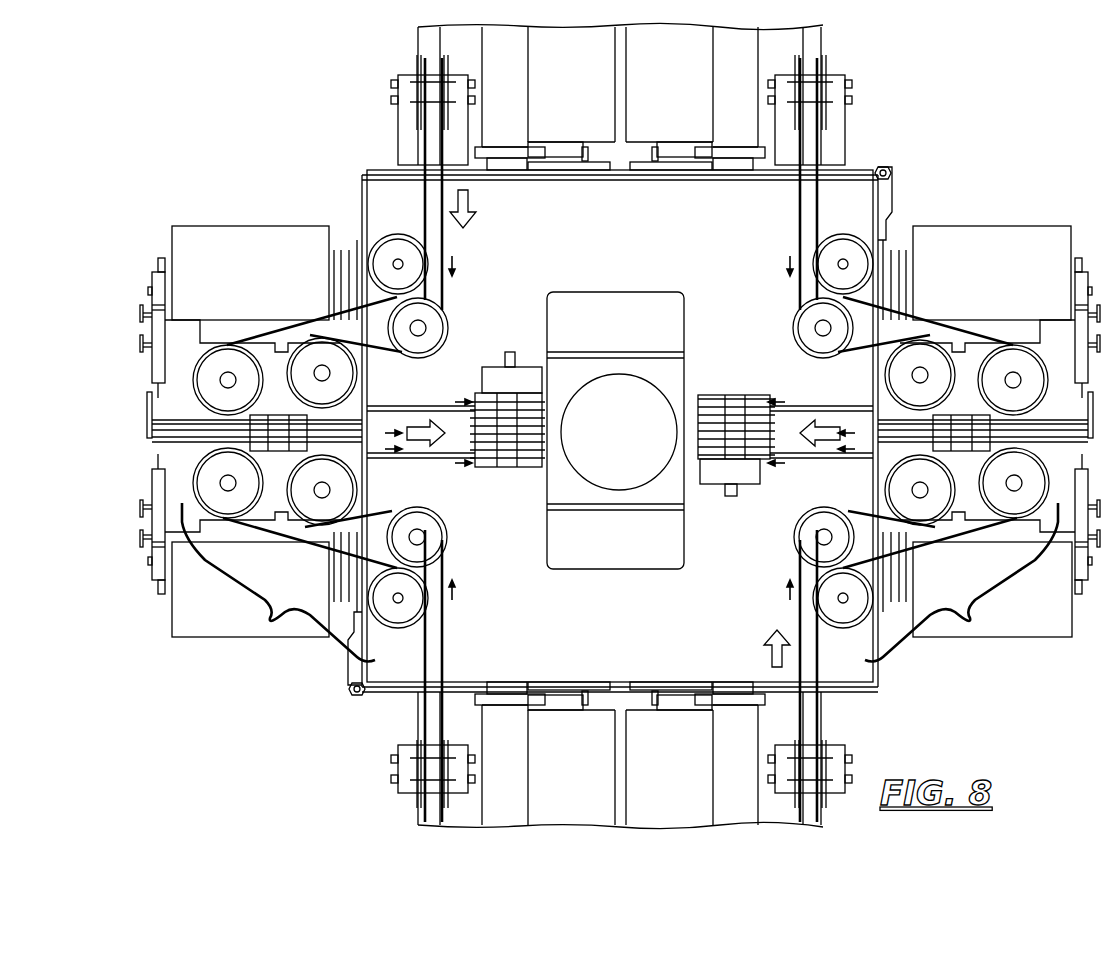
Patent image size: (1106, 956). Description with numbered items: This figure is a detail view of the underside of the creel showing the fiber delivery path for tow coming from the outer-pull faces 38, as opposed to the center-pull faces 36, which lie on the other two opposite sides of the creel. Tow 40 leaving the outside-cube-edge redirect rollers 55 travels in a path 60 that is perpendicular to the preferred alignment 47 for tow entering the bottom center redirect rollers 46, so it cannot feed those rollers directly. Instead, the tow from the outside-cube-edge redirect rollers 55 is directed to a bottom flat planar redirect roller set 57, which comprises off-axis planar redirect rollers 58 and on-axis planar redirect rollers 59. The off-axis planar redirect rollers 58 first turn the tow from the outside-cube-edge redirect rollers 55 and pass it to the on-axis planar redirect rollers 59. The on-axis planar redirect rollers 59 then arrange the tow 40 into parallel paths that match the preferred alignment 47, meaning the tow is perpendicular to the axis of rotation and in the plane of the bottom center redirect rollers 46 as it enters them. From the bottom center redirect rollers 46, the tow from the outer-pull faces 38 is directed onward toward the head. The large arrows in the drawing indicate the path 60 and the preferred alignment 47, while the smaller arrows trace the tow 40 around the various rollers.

The center-pull face 36 is at (895, 217).
The outer-pull face 38 is at (863, 155).
The tow 40 is at (430, 195).
The bottom center redirect rollers 46 is at (525, 430).
The preferred alignment 47 is at (428, 425).
The outside-cube-edge redirect rollers 55 is at (818, 60).
The bottom flat planar redirect roller set 57 is at (268, 621).
The off-axis planar redirect rollers 58 is at (380, 265).
The on-axis planar redirect rollers 59 is at (310, 350).
The path 60 is at (470, 205).